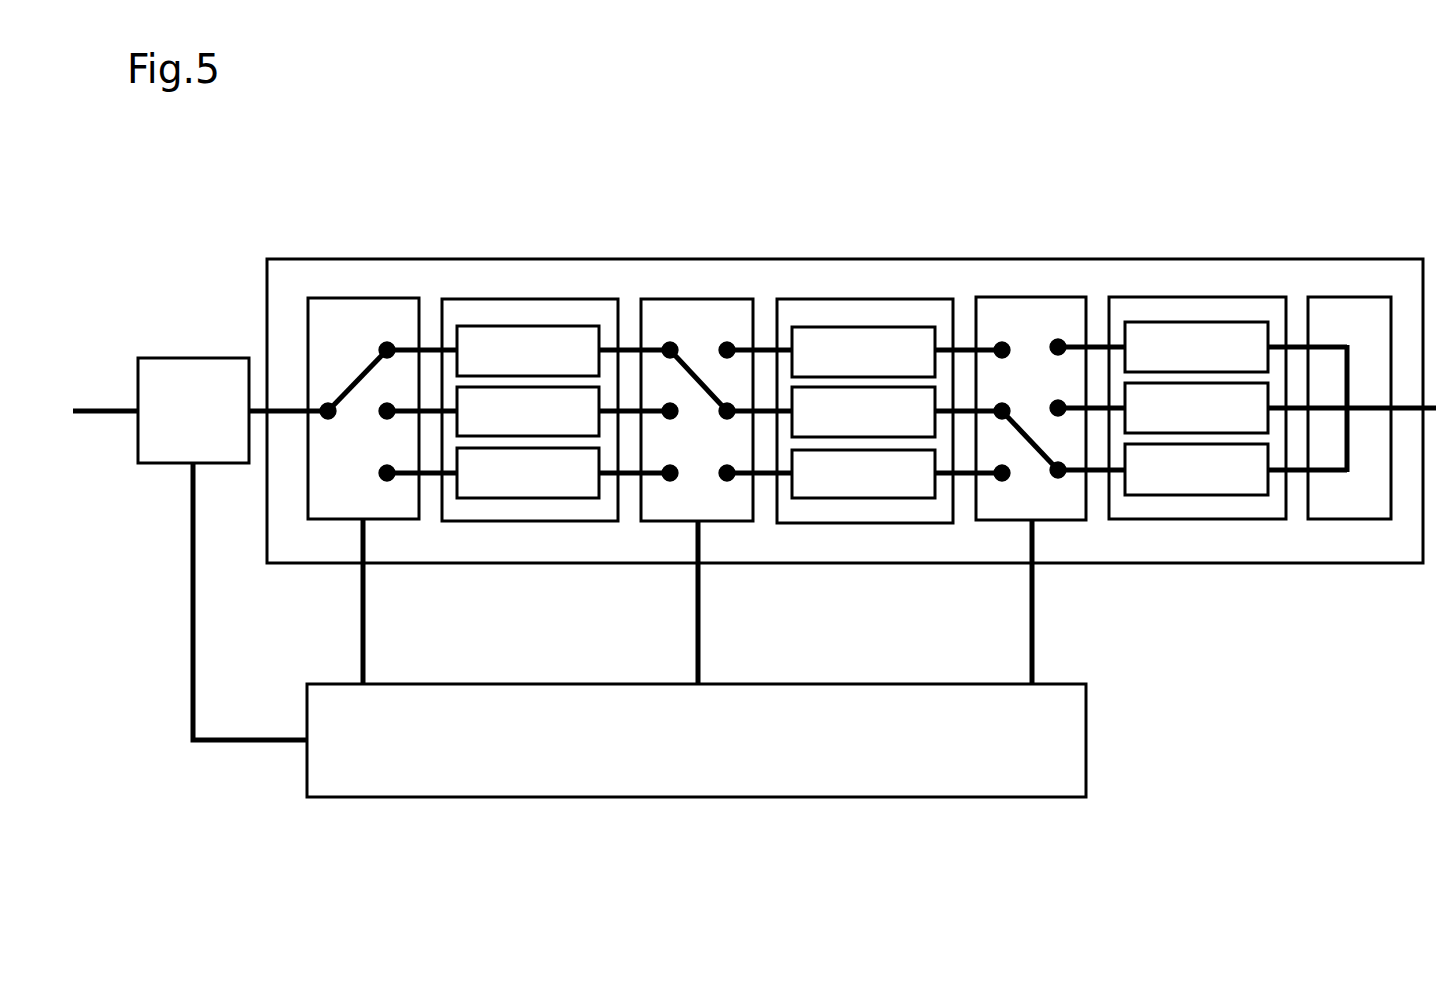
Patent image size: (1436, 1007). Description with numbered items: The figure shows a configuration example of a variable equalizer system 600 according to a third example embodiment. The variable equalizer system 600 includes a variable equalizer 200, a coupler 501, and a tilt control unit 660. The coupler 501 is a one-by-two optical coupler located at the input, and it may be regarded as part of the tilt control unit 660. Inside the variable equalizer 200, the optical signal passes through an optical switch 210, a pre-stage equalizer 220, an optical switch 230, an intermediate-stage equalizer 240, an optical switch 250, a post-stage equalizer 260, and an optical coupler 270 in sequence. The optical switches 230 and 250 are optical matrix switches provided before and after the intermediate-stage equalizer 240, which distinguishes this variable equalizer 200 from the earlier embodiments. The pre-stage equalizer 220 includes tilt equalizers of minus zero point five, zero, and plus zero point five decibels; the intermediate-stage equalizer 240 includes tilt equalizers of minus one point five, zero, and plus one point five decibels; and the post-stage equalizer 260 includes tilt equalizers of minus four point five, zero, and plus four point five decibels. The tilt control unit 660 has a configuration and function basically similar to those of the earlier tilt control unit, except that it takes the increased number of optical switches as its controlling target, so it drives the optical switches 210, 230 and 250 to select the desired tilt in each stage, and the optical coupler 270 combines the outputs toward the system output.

The variable equalizer system 600 is at (702, 122).
The variable equalizer 200 is at (300, 259).
The optical switch 210 is at (330, 298).
The pre-stage equalizer 220 is at (530, 299).
The optical switch 230 is at (725, 299).
The intermediate-stage equalizer 240 is at (800, 299).
The optical switch 250 is at (1020, 298).
The post-stage equalizer 260 is at (1122, 297).
The optical coupler 270 is at (1322, 297).
The coupler 501 is at (166, 358).
The tilt control unit 660 is at (1060, 685).